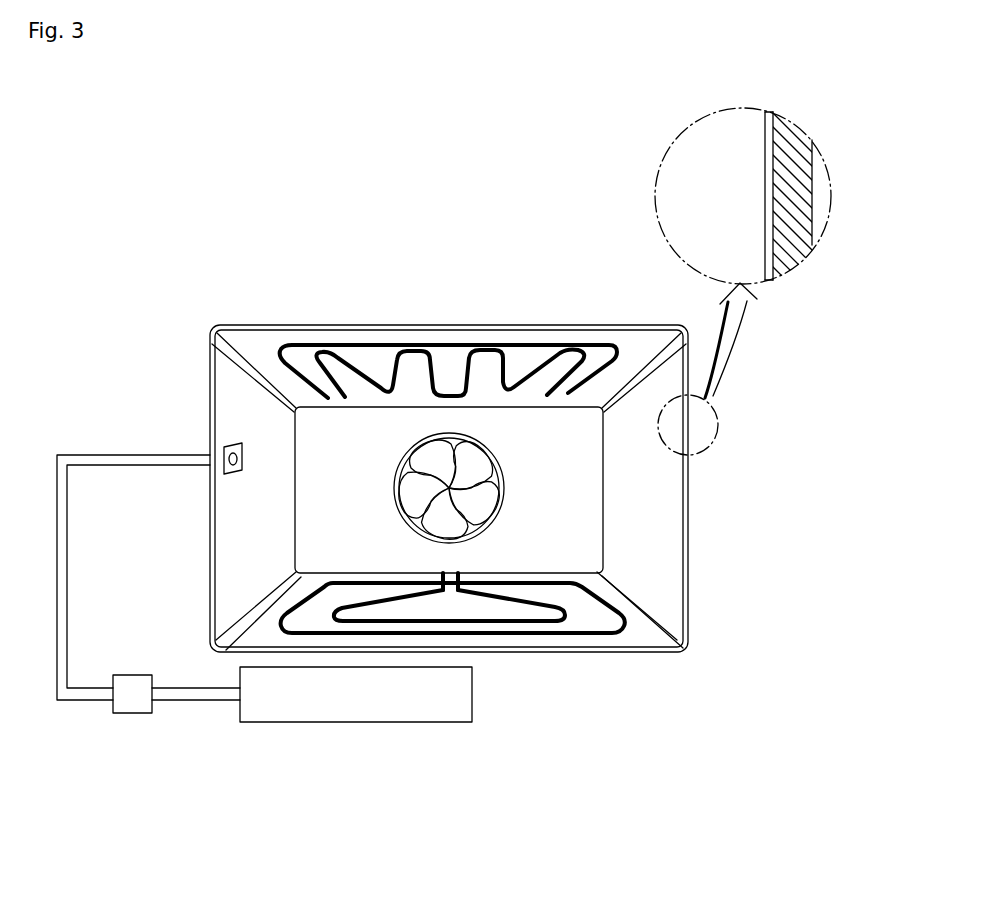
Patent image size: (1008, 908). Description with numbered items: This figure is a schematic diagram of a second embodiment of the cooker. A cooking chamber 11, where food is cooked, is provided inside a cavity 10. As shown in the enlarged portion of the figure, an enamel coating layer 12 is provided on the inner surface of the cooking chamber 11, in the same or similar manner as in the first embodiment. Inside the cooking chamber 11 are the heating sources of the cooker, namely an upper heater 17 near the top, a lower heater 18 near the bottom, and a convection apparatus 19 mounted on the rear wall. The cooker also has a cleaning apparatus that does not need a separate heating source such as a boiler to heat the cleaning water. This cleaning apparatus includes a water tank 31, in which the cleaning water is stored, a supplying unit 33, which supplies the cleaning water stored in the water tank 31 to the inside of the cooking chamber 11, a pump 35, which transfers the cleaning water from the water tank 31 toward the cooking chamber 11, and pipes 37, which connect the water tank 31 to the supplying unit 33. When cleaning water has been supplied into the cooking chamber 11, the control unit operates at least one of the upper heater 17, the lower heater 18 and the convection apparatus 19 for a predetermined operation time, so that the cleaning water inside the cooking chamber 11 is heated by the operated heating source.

The cavity 10 is at (487, 308).
The cooking chamber 11 is at (579, 505).
The enamel coating layer 12 is at (766, 142).
The upper heater 17 is at (379, 338).
The lower heater 18 is at (562, 634).
The convection apparatus 19 is at (527, 477).
The water tank 31 is at (360, 723).
The supplying unit 33 is at (230, 444).
The pump 35 is at (130, 714).
The pipes 37 is at (57, 485).